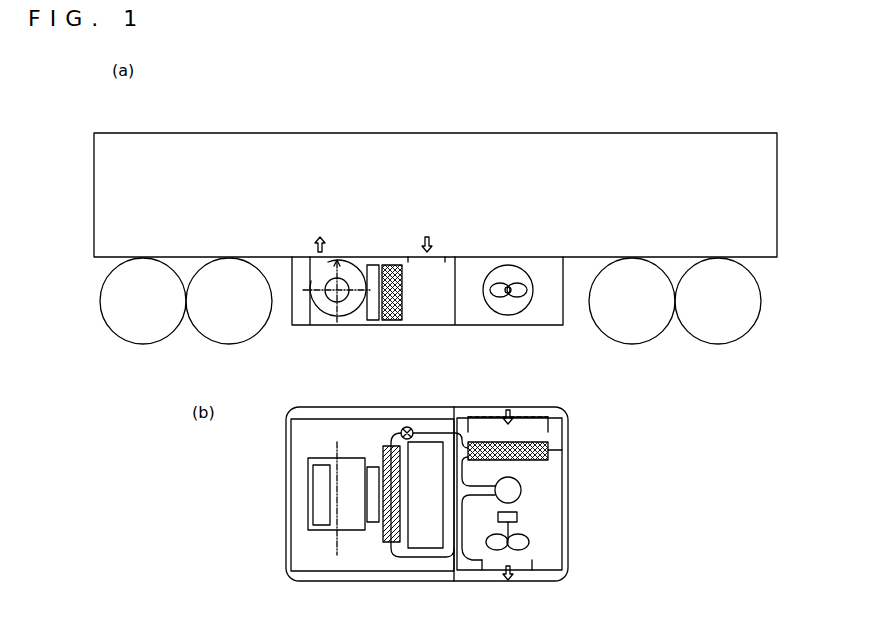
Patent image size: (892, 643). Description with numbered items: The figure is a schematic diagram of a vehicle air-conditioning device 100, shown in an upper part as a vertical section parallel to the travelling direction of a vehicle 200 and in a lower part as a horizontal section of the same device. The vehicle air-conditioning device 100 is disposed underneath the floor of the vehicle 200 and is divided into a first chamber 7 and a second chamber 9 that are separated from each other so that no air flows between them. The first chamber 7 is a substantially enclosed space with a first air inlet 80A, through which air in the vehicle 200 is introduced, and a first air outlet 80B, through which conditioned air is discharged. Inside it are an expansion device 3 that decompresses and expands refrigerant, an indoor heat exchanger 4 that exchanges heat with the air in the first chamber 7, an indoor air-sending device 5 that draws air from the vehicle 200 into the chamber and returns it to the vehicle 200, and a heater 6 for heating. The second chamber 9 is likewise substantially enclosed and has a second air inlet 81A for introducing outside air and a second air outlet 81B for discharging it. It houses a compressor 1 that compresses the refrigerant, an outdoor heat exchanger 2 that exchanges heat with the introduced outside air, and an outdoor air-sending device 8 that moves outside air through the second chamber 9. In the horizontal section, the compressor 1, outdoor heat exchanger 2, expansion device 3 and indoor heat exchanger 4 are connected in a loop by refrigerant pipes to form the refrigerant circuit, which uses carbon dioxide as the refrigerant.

The vehicle 200 is at (575, 145).
The vehicle air-conditioning device 100 is at (486, 256).
The first air inlet 80A is at (442, 245).
The first air outlet 80B is at (331, 243).
The second air inlet 81A is at (537, 407).
The second air outlet 81B is at (498, 578).
The compressor 1 is at (512, 489).
The outdoor heat exchanger 2 is at (552, 444).
The expansion device 3 is at (409, 427).
The indoor heat exchanger 4 is at (391, 320).
The indoor air-sending device 5 is at (327, 308).
The heater 6 is at (372, 311).
The first chamber 7 is at (290, 327).
The outdoor air-sending device 8 is at (521, 296).
The second chamber 9 is at (504, 322).